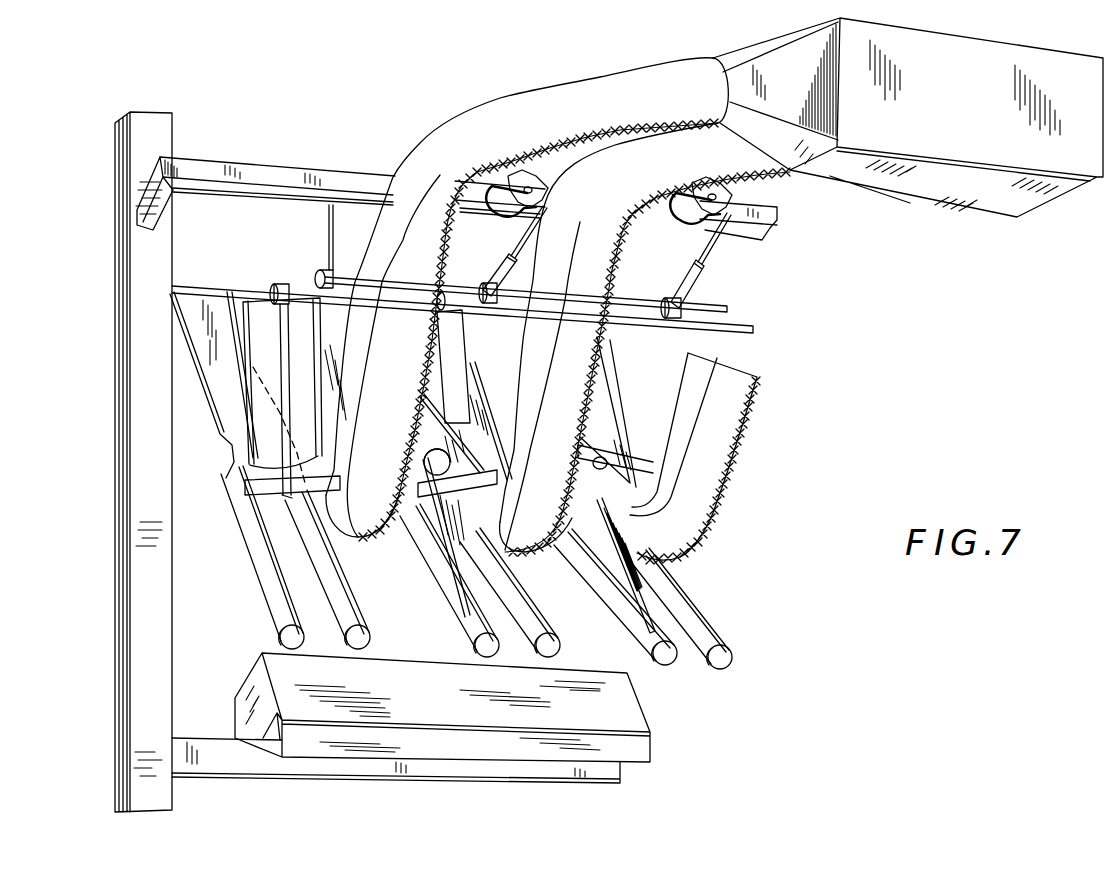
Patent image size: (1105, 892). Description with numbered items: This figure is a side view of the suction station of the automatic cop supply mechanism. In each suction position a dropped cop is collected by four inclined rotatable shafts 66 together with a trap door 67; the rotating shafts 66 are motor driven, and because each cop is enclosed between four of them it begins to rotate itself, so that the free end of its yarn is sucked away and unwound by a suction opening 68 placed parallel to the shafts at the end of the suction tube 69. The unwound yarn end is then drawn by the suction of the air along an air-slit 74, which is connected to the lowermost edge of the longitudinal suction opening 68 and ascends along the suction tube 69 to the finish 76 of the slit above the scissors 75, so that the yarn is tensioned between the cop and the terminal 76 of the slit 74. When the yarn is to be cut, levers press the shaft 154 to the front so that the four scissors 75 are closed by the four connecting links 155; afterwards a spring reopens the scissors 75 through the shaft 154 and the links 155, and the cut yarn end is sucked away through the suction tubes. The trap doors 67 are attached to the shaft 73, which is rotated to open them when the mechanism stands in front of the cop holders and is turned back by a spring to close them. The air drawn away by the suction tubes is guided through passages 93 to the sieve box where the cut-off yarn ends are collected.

The passages 93 is at (966, 145).
The air-slit 74 is at (558, 311).
The finish of the slit 76 is at (505, 168).
The scissors 75 is at (527, 180).
The connecting links 155 is at (712, 291).
The shaft 154 is at (729, 308).
The shaft 73 is at (755, 330).
The trap door 67 is at (248, 295).
The inclined rotatable shafts 66 is at (218, 433).
The suction opening 68 is at (262, 480).
The suction tube 69 is at (375, 534).